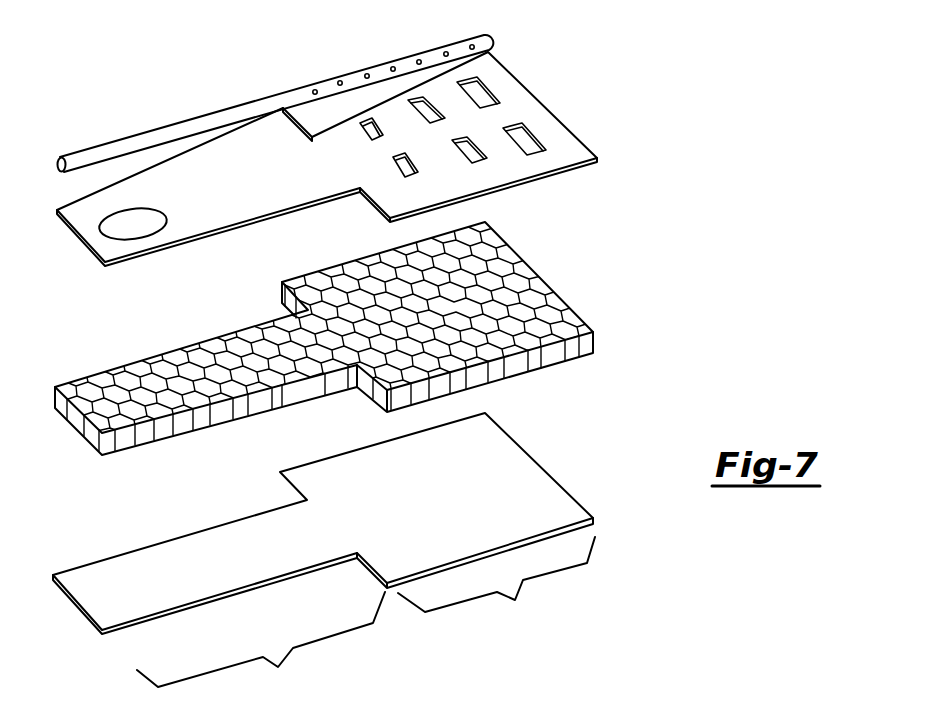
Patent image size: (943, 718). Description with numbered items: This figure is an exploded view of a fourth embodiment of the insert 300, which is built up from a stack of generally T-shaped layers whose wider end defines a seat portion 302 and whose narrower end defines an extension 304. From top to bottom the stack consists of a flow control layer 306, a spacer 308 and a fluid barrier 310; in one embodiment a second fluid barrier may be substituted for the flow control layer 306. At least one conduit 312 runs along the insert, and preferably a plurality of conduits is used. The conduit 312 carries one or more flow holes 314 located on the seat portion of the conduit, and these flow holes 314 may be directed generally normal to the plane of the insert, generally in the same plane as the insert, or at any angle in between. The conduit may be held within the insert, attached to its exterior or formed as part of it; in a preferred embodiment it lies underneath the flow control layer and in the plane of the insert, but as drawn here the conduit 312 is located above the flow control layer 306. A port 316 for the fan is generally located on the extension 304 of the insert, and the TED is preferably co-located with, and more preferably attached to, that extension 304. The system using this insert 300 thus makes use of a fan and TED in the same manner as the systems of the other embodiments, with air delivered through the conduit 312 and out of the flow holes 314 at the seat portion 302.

The insert 300 is at (707, 56).
The seat portion 302 is at (496, 584).
The extension 304 is at (261, 645).
The flow control layer 306 is at (572, 145).
The spacer 308 is at (555, 317).
The fluid barrier 310 is at (563, 505).
The conduit 312 is at (80, 153).
The flow holes 314 is at (367, 75).
The port 316 is at (118, 228).